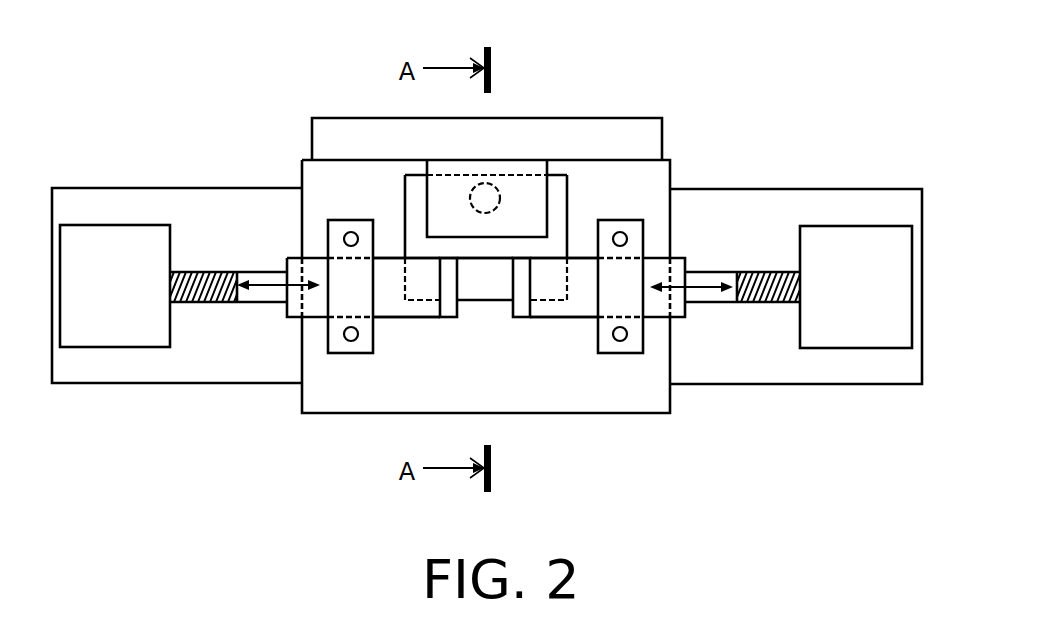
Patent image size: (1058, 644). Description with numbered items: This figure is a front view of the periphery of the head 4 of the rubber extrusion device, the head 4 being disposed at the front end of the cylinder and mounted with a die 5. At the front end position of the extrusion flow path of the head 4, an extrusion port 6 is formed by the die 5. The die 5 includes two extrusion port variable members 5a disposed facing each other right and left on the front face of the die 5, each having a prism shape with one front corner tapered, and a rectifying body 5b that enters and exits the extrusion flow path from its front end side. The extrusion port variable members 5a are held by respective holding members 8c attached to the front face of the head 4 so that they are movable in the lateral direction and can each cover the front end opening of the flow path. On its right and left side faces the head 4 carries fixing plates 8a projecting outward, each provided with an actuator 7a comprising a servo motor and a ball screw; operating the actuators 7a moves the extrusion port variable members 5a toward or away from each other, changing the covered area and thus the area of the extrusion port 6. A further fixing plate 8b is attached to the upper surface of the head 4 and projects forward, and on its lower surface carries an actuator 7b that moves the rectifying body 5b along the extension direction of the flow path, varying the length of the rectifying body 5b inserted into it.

The head 4 is at (622, 175).
The die 5 is at (430, 330).
The extrusion port variable member 5a is at (393, 303).
The rectifying body 5b is at (538, 250).
The extrusion port 6 is at (478, 290).
The actuator 7a is at (195, 241).
The actuator 7b is at (420, 173).
The fixing plate 8a is at (117, 200).
The fixing plate 8b is at (568, 132).
The holding member 8c is at (335, 325).